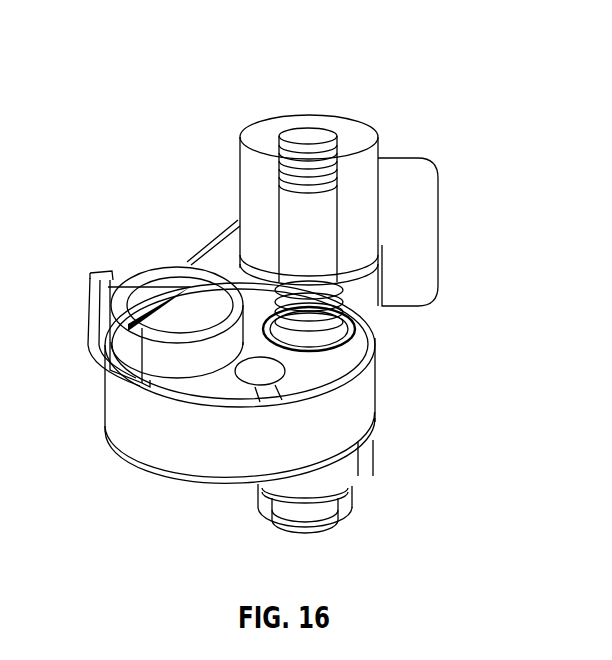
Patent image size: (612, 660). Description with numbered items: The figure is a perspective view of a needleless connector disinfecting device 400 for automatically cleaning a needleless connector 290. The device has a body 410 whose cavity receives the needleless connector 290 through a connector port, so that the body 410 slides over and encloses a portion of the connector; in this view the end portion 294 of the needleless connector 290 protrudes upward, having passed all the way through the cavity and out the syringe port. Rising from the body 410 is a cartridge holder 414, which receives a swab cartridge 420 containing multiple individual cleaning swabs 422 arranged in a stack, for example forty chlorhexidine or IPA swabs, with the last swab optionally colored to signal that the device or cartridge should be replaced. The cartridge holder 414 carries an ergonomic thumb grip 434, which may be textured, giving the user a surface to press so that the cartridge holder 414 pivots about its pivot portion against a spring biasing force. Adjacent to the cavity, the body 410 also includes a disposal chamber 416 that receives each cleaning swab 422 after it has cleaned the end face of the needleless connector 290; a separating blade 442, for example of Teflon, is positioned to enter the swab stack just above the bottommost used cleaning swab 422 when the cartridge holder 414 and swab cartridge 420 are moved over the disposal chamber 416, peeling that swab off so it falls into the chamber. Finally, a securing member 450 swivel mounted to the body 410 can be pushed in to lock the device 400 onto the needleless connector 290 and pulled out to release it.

The needleless connector disinfecting device 400 is at (357, 81).
The cartridge holder 414 is at (292, 232).
The cleaning swab 422 is at (305, 153).
The swab cartridge 420 is at (308, 247).
The ergonomic thumb grip 434 is at (417, 200).
The end portion 294 is at (352, 336).
The body 410 is at (128, 407).
The disposal chamber 416 is at (168, 318).
The separating blade 442 is at (100, 328).
The securing member 450 is at (367, 450).
The needleless connector 290 is at (350, 509).